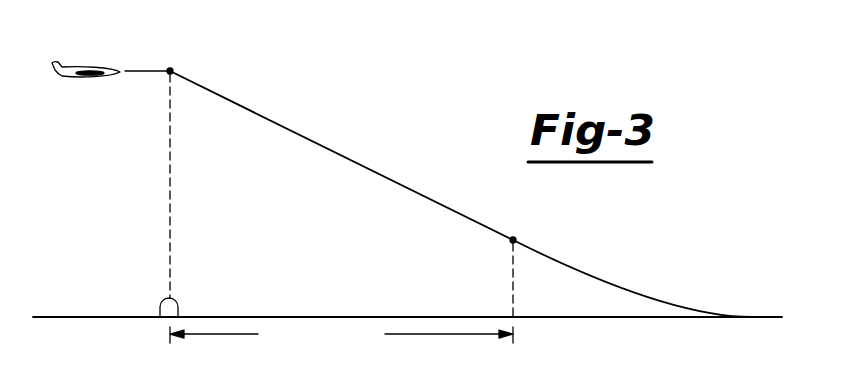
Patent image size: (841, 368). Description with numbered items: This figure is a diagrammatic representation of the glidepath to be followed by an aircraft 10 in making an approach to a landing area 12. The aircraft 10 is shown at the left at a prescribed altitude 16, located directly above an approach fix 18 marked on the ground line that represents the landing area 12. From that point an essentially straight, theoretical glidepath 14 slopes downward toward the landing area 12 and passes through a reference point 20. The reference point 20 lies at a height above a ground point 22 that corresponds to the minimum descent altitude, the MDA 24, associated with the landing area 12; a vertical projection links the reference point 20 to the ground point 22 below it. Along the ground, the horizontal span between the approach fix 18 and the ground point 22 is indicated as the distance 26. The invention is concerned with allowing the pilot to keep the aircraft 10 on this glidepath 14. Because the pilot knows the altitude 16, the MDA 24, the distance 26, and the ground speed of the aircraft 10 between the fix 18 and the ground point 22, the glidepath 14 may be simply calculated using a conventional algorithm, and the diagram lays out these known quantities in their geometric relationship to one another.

The aircraft 10 is at (100, 66).
The landing area 12 is at (716, 292).
The glidepath 14 is at (348, 152).
The altitude 16 is at (178, 69).
The approach fix 18 is at (178, 302).
The reference point 20 is at (509, 243).
The ground point 22 is at (516, 315).
The MDA 24 is at (518, 232).
The distance 26 is at (358, 325).